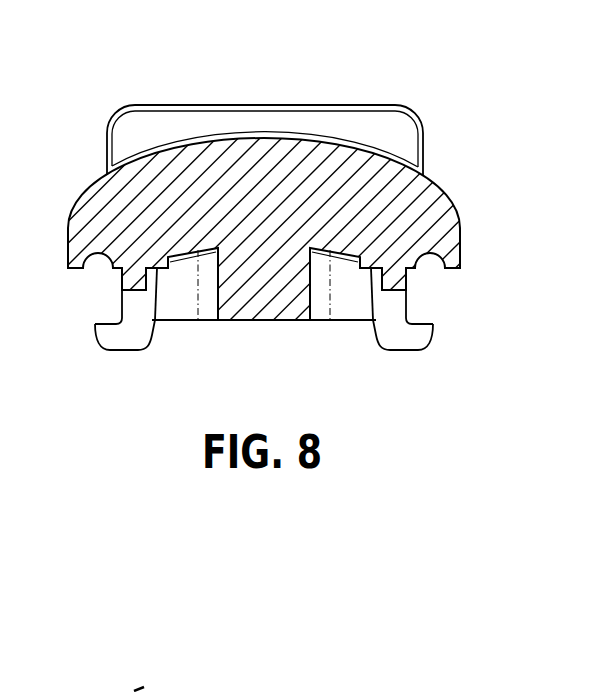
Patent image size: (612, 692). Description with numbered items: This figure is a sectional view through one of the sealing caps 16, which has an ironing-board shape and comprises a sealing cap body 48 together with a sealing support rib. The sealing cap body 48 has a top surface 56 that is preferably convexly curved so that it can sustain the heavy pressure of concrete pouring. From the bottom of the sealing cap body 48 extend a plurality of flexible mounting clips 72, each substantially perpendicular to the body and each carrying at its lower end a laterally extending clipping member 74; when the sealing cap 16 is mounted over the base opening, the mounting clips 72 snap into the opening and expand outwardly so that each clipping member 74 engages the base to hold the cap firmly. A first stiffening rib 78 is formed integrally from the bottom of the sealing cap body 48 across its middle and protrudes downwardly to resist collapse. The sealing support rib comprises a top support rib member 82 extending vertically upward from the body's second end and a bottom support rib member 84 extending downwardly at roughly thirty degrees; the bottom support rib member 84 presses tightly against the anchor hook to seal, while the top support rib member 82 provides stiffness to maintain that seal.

The sealing cap 16 is at (272, 65).
The sealing cap body 48 is at (370, 194).
The top surface 56 is at (325, 140).
The flexible mounting clip 72 is at (130, 303).
The clipping member 74 is at (115, 337).
The first stiffening rib 78 is at (260, 308).
The top support rib member 82 is at (159, 124).
The bottom support rib member 84 is at (347, 298).